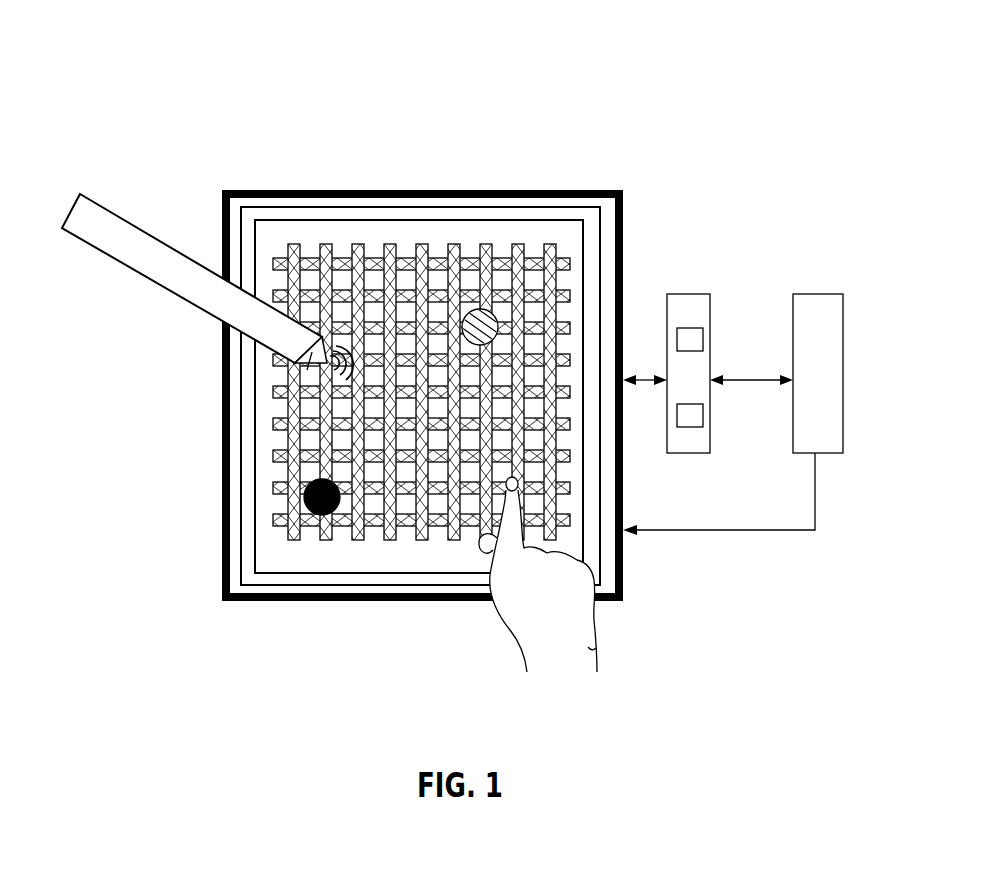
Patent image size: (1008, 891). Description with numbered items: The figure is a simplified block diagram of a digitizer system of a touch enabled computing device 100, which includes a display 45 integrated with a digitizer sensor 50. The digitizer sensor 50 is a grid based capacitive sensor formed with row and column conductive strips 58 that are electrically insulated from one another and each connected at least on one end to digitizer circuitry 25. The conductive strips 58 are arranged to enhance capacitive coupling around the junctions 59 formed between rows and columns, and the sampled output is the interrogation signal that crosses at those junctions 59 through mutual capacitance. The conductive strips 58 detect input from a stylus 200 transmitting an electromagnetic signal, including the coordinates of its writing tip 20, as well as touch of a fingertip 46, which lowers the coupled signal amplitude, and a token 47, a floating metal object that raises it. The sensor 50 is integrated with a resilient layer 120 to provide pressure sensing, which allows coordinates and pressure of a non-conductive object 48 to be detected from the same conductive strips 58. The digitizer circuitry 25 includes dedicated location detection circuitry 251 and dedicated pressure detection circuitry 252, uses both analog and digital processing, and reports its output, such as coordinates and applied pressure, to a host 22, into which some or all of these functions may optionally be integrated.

The computing device 100 is at (416, 100).
The stylus 200 is at (192, 258).
The writing tip 20 is at (307, 373).
The resilient layer 120 is at (457, 204).
The display 45 is at (545, 192).
The non-conductive object 48 is at (498, 318).
The digitizer sensor 50 is at (585, 272).
The conductive strips 58 is at (487, 248).
The junctions 59 is at (386, 492).
The token 47 is at (302, 522).
The fingertip 46 is at (508, 489).
The digitizer circuitry 25 is at (687, 294).
The dedicated location detection circuitry 251 is at (703, 336).
The dedicated pressure detection circuitry 252 is at (703, 415).
The host 22 is at (818, 294).